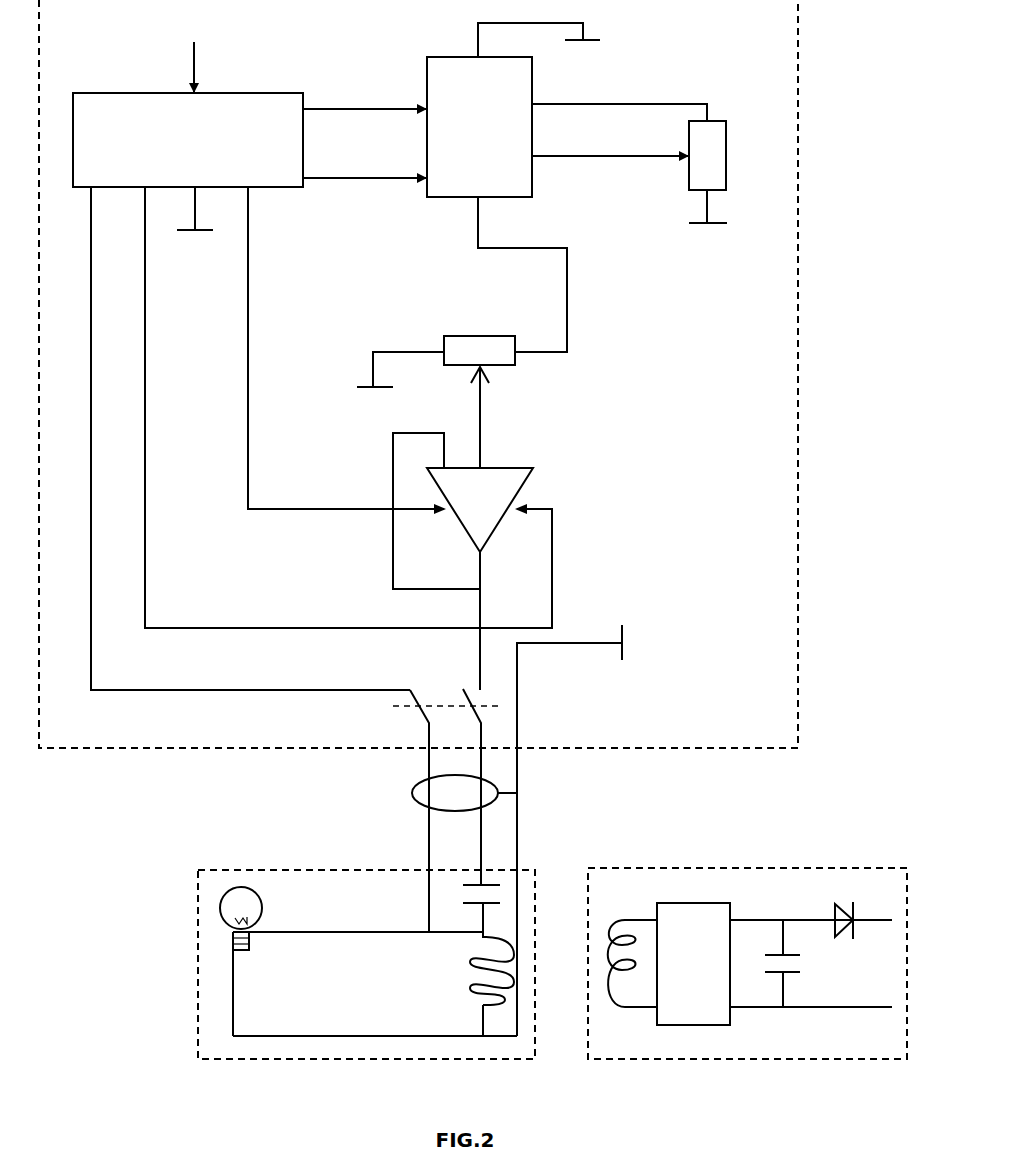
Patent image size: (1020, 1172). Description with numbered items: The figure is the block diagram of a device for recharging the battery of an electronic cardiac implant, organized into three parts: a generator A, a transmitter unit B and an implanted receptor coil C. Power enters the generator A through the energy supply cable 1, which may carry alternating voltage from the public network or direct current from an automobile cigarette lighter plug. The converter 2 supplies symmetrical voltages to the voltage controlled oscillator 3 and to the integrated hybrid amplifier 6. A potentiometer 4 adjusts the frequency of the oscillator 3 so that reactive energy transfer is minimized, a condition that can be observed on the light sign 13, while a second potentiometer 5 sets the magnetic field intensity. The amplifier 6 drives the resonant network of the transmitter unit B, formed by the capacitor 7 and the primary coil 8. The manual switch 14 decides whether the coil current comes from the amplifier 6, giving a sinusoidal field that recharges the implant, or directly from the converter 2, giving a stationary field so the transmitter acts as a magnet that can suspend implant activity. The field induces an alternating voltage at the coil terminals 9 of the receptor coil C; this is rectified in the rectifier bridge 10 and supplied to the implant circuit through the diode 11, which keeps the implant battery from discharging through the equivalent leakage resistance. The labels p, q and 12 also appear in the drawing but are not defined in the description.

The energy supply cable 1 is at (194, 50).
The converter 2 is at (312, 391).
The voltage controlled oscillator 3 is at (567, 187).
The potentiometer 4 is at (730, 169).
The potentiometer 5 is at (436, 345).
The integrated hybrid amplifier 6 is at (463, 528).
The capacitor 7 is at (447, 908).
The primary coil 8 is at (375, 984).
The coil terminals 9 is at (631, 981).
The rectifier bridge 10 is at (774, 964).
The diode 11 is at (812, 981).
The light emitting diode 12 is at (837, 932).
The light sign 13 is at (256, 938).
The manual switch 14 is at (446, 789).
The connector p is at (455, 782).
The connector q is at (411, 840).
The generator A is at (443, 374).
The transmitter unit B is at (366, 983).
The receptor coil C is at (747, 982).